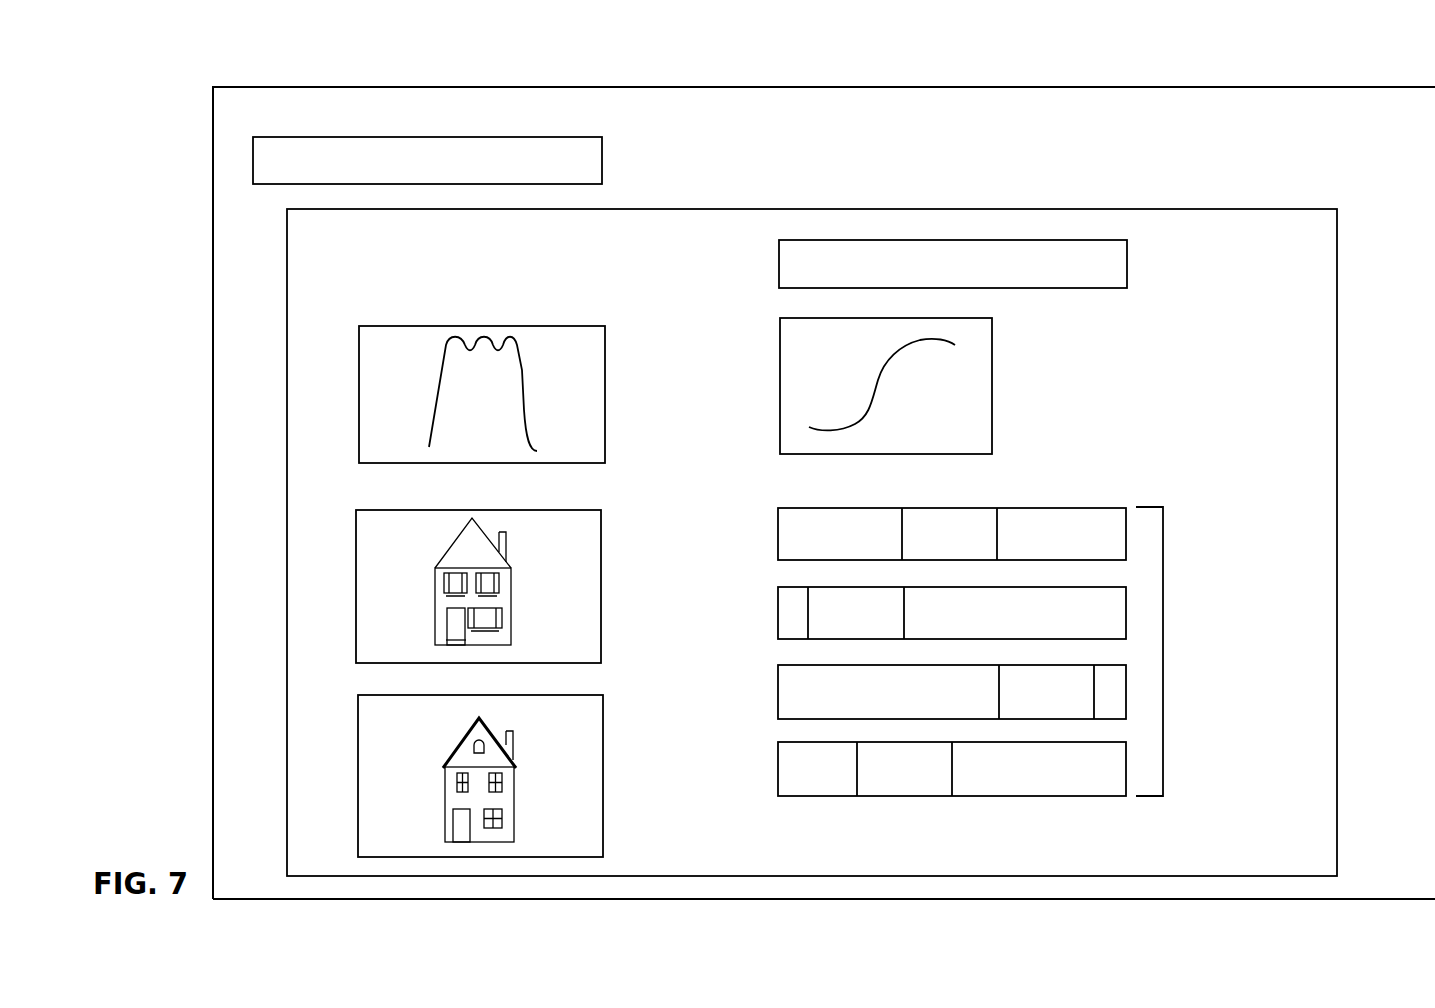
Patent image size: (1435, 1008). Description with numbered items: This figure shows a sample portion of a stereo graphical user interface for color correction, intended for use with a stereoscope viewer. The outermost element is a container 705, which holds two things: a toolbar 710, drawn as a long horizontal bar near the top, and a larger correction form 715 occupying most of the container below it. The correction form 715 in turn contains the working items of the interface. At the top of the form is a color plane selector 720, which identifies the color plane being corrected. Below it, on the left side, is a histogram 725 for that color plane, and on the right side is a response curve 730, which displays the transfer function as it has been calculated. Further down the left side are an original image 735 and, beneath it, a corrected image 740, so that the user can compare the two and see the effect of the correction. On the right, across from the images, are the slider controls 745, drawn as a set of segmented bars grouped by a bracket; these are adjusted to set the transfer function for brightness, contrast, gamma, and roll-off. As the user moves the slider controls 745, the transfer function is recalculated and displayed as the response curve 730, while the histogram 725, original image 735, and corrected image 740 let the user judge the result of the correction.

The container 705 is at (853, 80).
The toolbar 710 is at (611, 155).
The correction form 715 is at (1346, 841).
The color plane selector 720 is at (770, 264).
The histogram 725 is at (350, 392).
The response curve 730 is at (1001, 386).
The original image 735 is at (347, 589).
The corrected image 740 is at (350, 776).
The slider controls 745 is at (1173, 671).